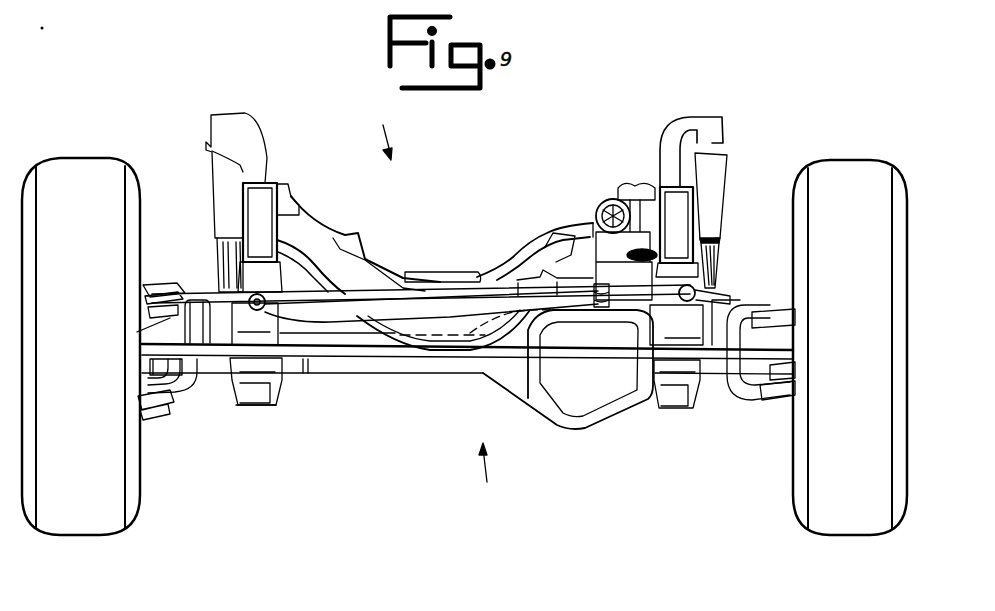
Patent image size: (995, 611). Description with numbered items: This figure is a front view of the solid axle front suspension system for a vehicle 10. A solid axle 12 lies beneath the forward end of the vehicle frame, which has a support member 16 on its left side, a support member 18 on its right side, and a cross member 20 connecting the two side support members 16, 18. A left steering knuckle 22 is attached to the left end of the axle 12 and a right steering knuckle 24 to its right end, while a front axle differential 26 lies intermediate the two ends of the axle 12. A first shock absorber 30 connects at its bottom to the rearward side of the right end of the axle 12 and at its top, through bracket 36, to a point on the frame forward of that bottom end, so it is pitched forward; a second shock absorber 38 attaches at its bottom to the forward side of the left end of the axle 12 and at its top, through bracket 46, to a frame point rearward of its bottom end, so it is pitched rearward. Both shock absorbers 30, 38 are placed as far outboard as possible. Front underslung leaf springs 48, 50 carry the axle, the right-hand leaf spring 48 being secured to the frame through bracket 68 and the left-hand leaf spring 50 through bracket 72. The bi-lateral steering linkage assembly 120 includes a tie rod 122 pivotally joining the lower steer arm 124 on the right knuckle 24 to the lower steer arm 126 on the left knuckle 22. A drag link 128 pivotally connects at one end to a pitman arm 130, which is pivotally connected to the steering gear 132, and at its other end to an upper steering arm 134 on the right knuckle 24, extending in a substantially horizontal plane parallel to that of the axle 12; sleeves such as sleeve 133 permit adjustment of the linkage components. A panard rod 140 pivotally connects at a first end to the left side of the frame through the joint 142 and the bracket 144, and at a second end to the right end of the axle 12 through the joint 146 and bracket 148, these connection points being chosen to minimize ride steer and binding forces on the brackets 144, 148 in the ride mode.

The vehicle 10 is at (379, 130).
The solid axle 12 is at (452, 377).
The support member 16 is at (660, 186).
The support member 18 is at (283, 185).
The cross member 20 is at (530, 247).
The left steering knuckle 22 is at (780, 313).
The right steering knuckle 24 is at (152, 285).
The front axle differential 26 is at (593, 430).
The first shock absorber 30 is at (212, 206).
The bracket 36 is at (247, 115).
The second shock absorber 38 is at (727, 187).
The bracket 46 is at (670, 132).
The leaf spring 48 is at (259, 407).
The leaf spring 50 is at (675, 410).
The bracket 68 is at (276, 388).
The bracket 72 is at (697, 395).
The bi-lateral steering linkage assembly 120 is at (490, 477).
The tie rod 122 is at (165, 397).
The lower steer arm 124 is at (148, 366).
The lower steer arm 126 is at (800, 381).
The drag link 128 is at (450, 275).
The pitman arm 130 is at (612, 275).
The steering gear 132 is at (622, 186).
The sleeve 133 is at (565, 232).
The upper steering arm 134 is at (137, 333).
The panard rod 140 is at (353, 322).
The joint 142 is at (700, 288).
The bracket 144 is at (713, 256).
The joint 146 is at (310, 243).
The bracket 148 is at (245, 303).